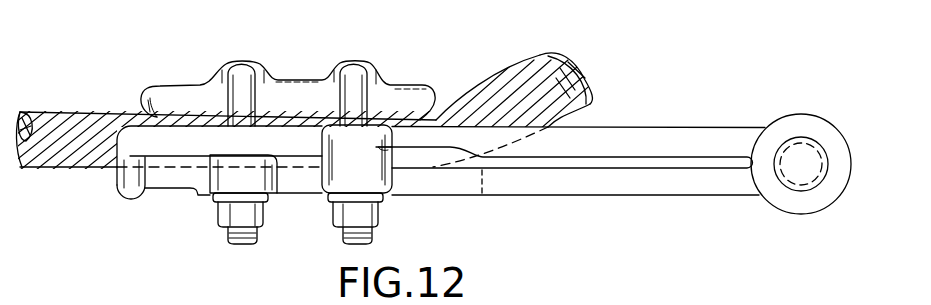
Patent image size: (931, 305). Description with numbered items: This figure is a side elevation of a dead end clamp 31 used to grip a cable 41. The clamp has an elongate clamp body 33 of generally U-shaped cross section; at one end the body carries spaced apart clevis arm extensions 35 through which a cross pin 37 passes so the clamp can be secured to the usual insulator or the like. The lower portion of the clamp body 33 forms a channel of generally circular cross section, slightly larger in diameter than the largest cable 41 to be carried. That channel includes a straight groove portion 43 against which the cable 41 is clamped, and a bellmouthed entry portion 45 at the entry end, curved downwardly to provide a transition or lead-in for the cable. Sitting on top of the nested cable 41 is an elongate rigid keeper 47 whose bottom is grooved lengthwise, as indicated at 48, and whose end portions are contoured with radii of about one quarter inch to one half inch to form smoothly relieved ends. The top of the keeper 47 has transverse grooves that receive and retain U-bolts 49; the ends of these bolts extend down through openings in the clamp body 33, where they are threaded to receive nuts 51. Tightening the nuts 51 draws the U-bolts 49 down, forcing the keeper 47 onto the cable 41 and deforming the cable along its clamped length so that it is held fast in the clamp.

The dead end clamp 31 is at (400, 80).
The clamp body 33 is at (313, 159).
The clevis arm extensions 35 is at (697, 127).
The cross pin 37 is at (797, 157).
The cable 41 is at (45, 125).
The straight groove portion 43 is at (190, 166).
The bellmouthed entry portion 45 is at (128, 199).
The keeper 47 is at (318, 77).
The lengthwise groove 48 is at (152, 117).
The U-bolts 49 is at (265, 30).
The nuts 51 is at (332, 215).